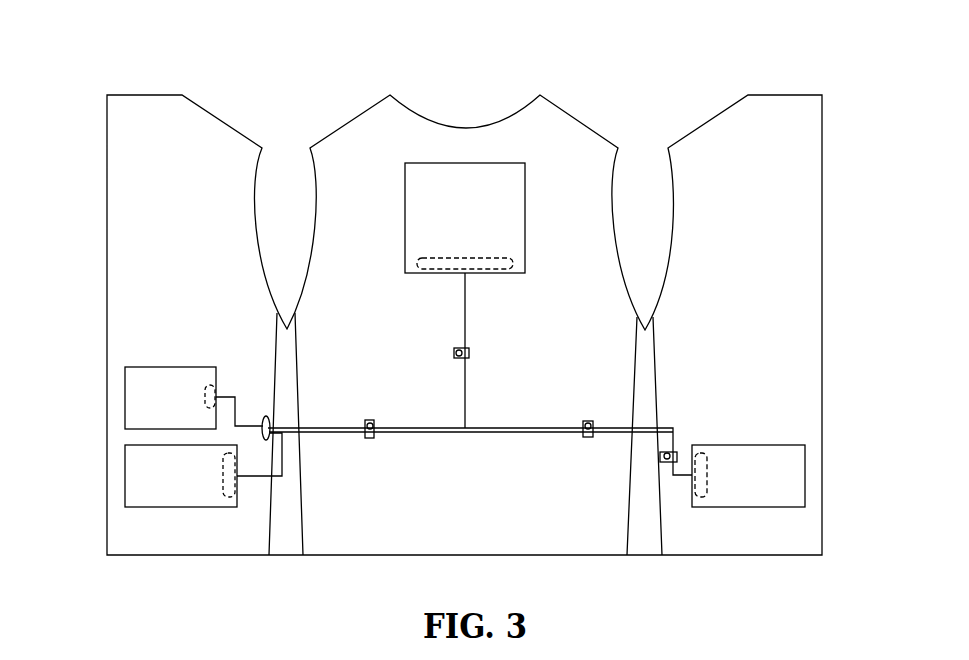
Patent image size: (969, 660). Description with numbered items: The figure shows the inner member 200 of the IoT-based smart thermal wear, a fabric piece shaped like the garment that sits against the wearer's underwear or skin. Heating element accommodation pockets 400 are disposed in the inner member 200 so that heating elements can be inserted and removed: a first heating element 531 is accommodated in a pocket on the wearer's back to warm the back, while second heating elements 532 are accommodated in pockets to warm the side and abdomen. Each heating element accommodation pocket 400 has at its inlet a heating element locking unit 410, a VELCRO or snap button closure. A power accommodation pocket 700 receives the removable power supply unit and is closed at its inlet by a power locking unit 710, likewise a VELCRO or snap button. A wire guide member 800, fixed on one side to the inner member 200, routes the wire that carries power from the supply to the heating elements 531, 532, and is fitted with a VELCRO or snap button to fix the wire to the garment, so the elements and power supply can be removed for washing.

The inner member 200 is at (553, 127).
The heating element accommodation pocket 400 is at (155, 483).
The heating element locking unit 410 is at (219, 477).
The first heating element 531 is at (775, 469).
The second heating element 532 is at (468, 200).
The power accommodation pocket 700 is at (155, 400).
The power locking unit 710 is at (205, 398).
The wire guide member 800 is at (364, 424).